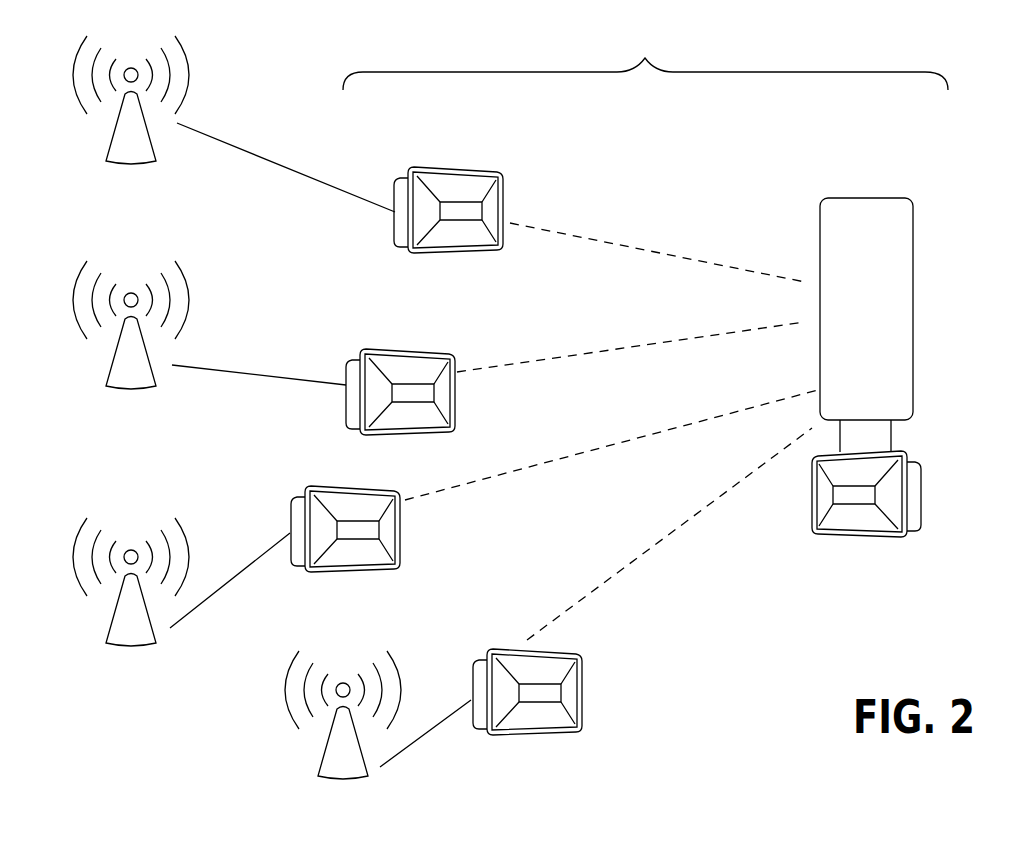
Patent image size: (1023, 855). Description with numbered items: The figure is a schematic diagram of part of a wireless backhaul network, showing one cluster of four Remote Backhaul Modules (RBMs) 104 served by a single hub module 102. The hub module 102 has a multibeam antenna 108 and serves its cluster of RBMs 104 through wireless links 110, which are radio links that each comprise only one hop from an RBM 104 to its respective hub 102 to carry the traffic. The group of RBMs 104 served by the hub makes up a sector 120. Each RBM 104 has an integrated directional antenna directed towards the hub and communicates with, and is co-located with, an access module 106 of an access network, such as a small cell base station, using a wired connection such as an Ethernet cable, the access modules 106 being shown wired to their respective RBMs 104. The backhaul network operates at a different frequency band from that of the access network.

The hub module 102 is at (900, 494).
The Remote Backhaul Module (RBM) 104 is at (469, 418).
The access module antenna (AM) 106 is at (250, 423).
The multibeam antenna 108 is at (895, 325).
The wireless link 110 is at (611, 428).
The sector 120 is at (645, 56).